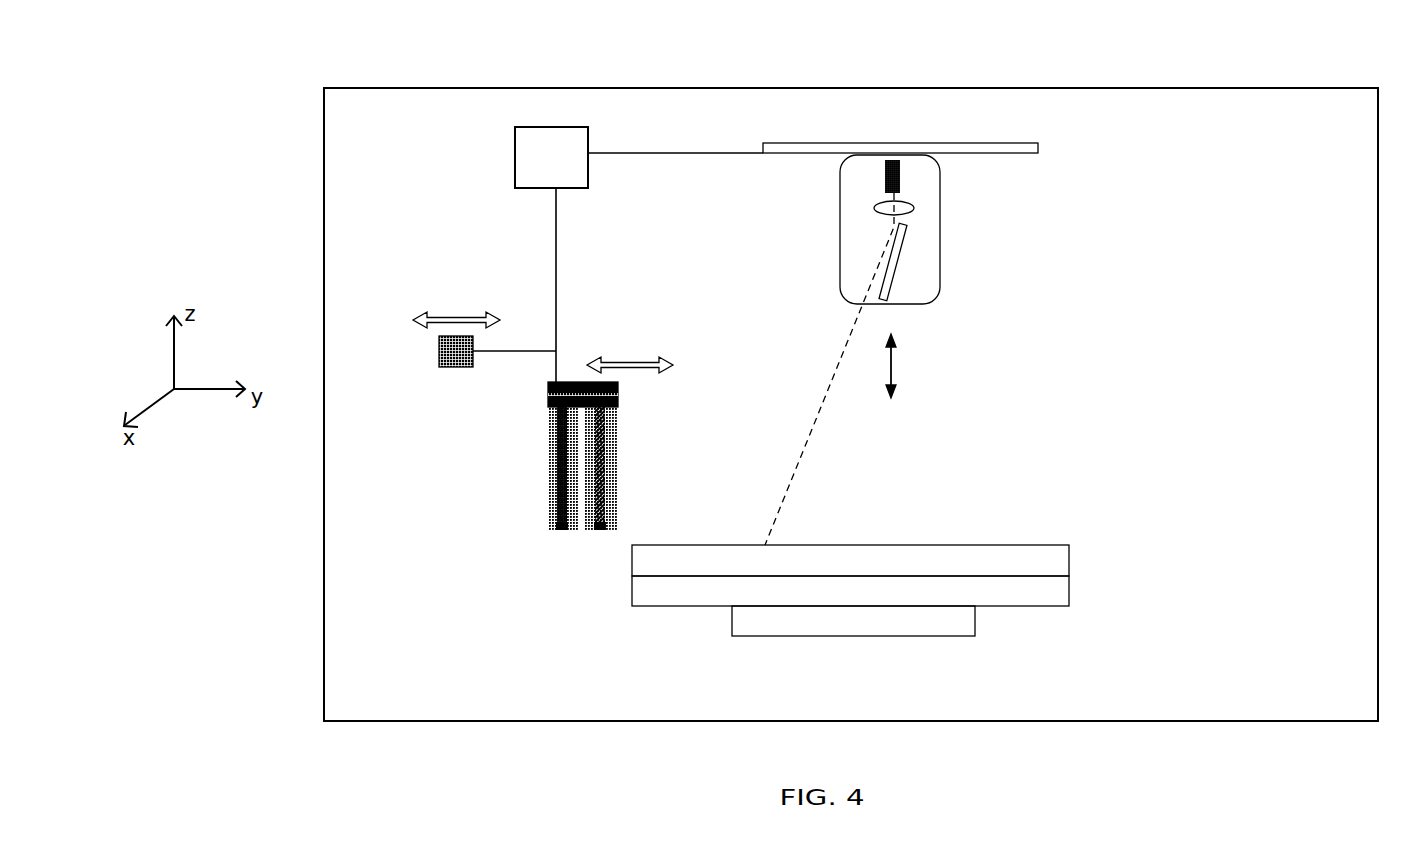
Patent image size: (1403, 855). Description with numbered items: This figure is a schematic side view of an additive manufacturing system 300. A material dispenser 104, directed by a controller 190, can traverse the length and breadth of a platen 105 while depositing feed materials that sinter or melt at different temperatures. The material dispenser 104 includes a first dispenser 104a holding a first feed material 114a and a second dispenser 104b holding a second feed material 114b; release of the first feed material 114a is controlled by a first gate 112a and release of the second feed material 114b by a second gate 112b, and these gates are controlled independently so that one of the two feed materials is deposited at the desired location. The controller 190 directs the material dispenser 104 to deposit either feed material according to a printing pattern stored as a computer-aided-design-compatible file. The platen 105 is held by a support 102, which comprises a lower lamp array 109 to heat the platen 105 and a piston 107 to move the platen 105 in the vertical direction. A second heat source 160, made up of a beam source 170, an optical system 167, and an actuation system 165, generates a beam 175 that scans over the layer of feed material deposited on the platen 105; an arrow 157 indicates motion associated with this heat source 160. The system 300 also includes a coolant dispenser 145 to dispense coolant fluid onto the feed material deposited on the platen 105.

The additive manufacturing system 300 is at (1172, 100).
The controller 190 is at (551, 157).
The coolant dispenser 145 is at (450, 353).
The material dispenser 104 is at (581, 452).
The first dispenser 104a is at (513, 489).
The second dispenser 104b is at (616, 500).
The first feed material 114a is at (565, 490).
The second feed material 114b is at (603, 492).
The first gate 112a is at (563, 530).
The second gate 112b is at (600, 533).
The second heat source 160 is at (896, 226).
The beam source 170 is at (893, 162).
The optical system 167 is at (875, 207).
The actuation system 165 is at (908, 237).
The vertical motion 157 is at (893, 366).
The beam 175 is at (810, 455).
The platen 105 is at (850, 560).
The lower lamp array 109 is at (850, 591).
The piston 107 is at (853, 621).
The support 102 is at (850, 620).